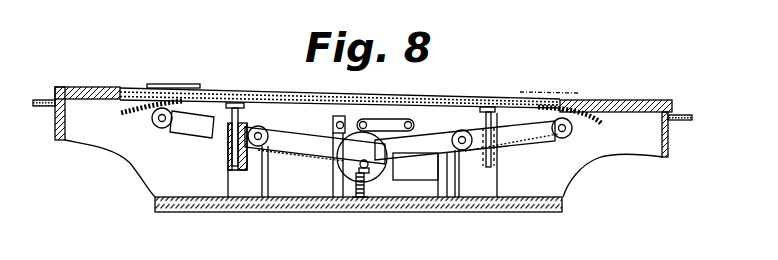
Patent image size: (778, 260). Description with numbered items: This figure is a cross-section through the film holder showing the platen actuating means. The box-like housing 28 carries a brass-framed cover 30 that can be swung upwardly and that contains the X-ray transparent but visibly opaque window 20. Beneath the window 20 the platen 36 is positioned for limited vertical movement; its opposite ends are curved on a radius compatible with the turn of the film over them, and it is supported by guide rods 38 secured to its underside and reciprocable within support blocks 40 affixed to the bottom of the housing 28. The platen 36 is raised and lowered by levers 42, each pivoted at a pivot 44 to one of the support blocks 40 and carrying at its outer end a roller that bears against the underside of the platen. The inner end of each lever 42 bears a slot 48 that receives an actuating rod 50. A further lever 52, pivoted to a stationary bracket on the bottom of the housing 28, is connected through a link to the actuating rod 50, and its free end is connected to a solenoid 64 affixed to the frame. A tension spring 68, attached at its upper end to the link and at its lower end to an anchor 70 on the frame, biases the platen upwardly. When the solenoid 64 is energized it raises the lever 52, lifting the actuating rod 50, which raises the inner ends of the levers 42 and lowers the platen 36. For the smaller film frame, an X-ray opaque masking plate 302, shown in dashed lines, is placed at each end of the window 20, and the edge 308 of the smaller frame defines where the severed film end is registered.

The window 20 is at (608, 97).
The housing 28 is at (669, 148).
The cover 30 is at (662, 100).
The platen 36 is at (122, 107).
The guide rods 38 is at (245, 127).
The support blocks 40 is at (228, 184).
The levers 42 is at (178, 135).
The pivot 44 is at (151, 123).
The slot 48 is at (394, 159).
The actuating rod 50 is at (369, 180).
The lever 52 is at (386, 124).
The solenoid 64 is at (440, 188).
The tension spring 68 is at (352, 186).
The anchor 70 is at (356, 196).
The masking plate 302 is at (192, 85).
The edge 308 is at (520, 92).